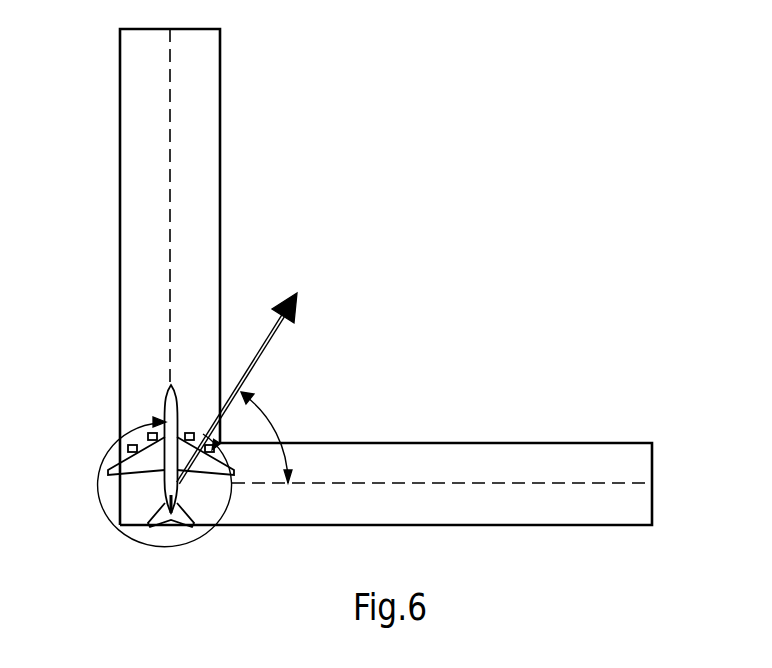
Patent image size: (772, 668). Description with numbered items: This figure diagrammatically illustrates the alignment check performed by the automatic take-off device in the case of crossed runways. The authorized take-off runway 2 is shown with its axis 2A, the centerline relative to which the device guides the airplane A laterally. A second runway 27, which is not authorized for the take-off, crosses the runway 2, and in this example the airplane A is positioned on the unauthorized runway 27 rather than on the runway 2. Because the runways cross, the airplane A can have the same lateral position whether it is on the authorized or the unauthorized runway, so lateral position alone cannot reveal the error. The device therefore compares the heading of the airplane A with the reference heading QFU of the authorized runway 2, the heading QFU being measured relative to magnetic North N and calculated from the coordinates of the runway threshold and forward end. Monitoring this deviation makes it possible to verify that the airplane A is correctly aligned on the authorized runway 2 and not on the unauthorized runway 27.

The unauthorized runway 27 is at (222, 140).
The runway 2 is at (560, 527).
The axis of the runway 2A is at (522, 483).
The airplane A is at (173, 402).
The magnetic North N is at (267, 348).
The heading of the runway QFU is at (273, 426).